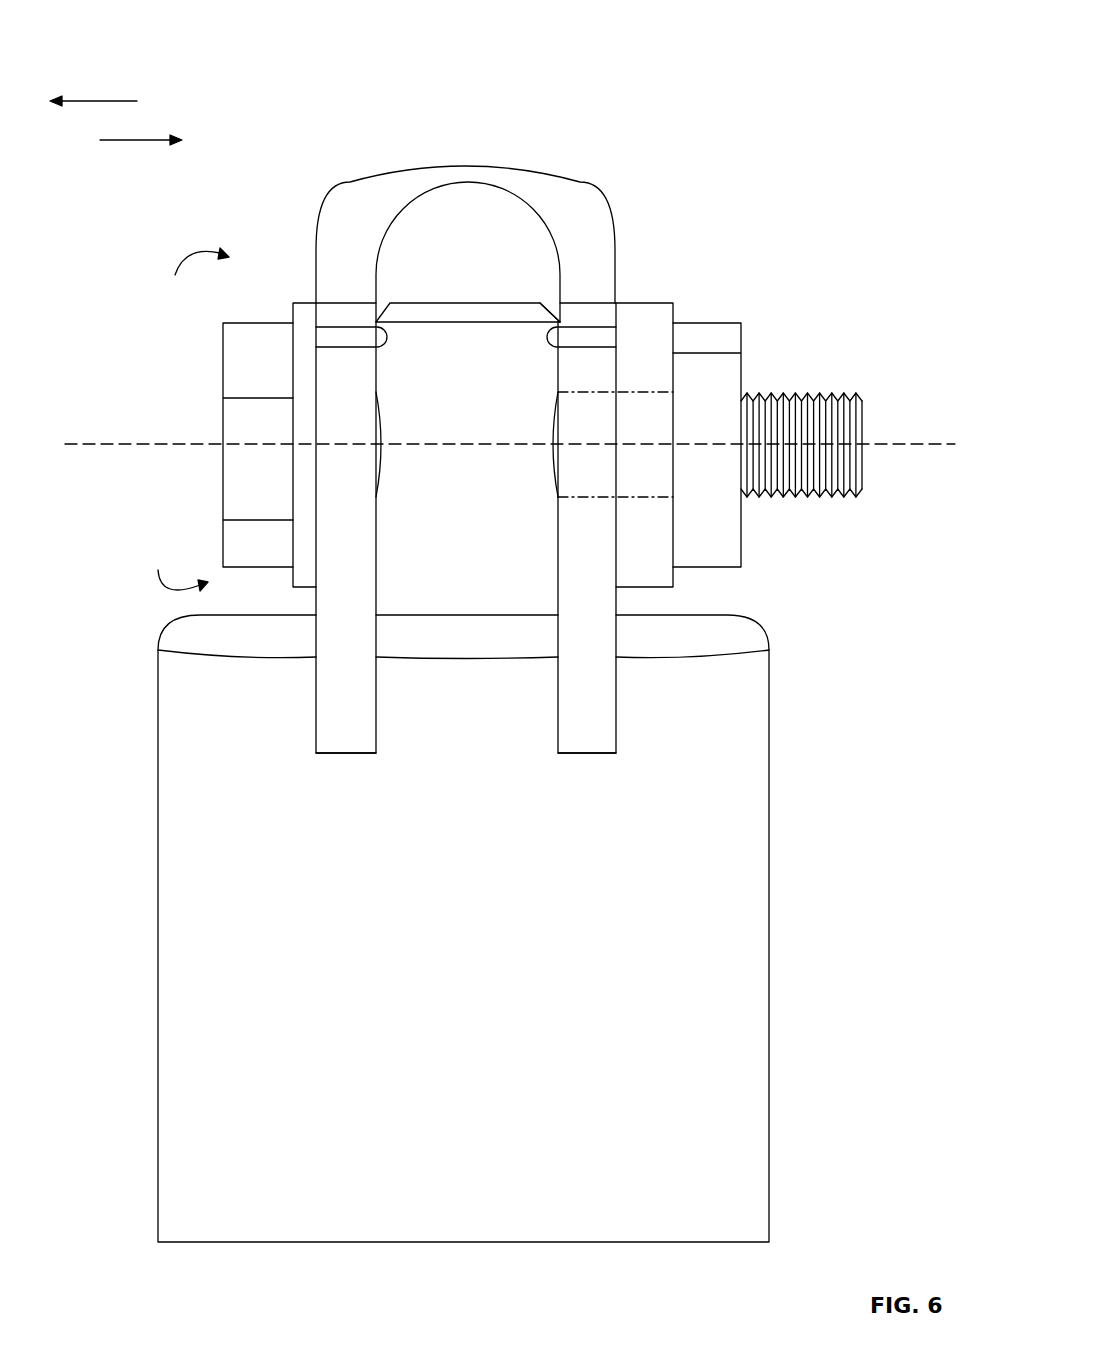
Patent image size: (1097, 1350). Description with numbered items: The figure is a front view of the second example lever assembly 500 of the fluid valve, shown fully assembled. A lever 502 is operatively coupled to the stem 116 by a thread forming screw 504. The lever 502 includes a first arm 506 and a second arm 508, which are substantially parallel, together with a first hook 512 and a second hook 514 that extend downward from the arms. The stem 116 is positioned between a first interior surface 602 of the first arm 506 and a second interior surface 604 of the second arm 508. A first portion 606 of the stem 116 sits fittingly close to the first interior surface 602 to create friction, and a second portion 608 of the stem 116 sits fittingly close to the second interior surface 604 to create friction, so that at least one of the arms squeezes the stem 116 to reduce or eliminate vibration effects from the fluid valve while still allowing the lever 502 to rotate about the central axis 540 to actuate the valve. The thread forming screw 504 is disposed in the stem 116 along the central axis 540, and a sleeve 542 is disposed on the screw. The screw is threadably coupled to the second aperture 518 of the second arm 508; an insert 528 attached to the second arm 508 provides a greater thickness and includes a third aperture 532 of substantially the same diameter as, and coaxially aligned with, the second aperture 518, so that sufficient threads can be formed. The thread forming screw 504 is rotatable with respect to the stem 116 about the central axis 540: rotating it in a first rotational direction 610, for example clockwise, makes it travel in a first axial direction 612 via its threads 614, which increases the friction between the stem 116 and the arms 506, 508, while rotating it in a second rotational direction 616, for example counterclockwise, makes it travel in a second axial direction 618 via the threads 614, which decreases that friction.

The lever assembly 500 is at (735, 55).
The lever 502 is at (467, 163).
The thread forming screw 504 is at (223, 365).
The first arm 506 is at (350, 568).
The second arm 508 is at (580, 568).
The first hook 512 is at (345, 755).
The second hook 514 is at (597, 755).
The second aperture 518 is at (590, 497).
The insert 528 is at (641, 303).
The third aperture 532 is at (641, 392).
The central axis 540 is at (137, 444).
The sleeve 542 is at (741, 368).
The first interior surface 602 is at (377, 322).
The second interior surface 604 is at (558, 322).
The first portion 606 is at (377, 373).
The second portion 608 is at (557, 372).
The first rotational direction 610 is at (197, 250).
The first axial direction 612 is at (115, 139).
The threads 614 is at (820, 512).
The second rotational direction 616 is at (167, 592).
The second axial direction 618 is at (117, 100).
The stem 116 is at (463, 570).